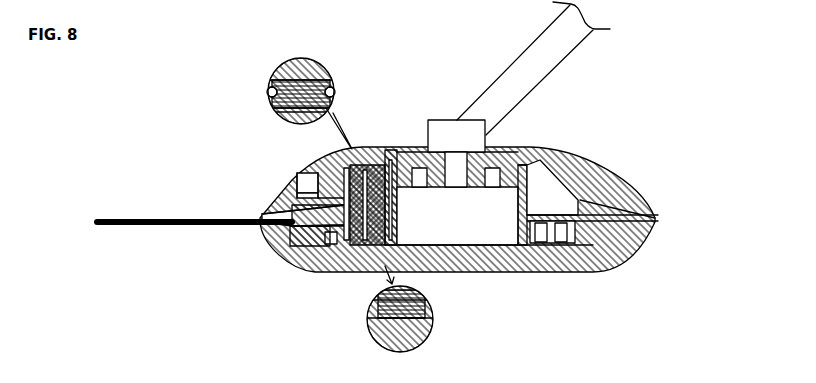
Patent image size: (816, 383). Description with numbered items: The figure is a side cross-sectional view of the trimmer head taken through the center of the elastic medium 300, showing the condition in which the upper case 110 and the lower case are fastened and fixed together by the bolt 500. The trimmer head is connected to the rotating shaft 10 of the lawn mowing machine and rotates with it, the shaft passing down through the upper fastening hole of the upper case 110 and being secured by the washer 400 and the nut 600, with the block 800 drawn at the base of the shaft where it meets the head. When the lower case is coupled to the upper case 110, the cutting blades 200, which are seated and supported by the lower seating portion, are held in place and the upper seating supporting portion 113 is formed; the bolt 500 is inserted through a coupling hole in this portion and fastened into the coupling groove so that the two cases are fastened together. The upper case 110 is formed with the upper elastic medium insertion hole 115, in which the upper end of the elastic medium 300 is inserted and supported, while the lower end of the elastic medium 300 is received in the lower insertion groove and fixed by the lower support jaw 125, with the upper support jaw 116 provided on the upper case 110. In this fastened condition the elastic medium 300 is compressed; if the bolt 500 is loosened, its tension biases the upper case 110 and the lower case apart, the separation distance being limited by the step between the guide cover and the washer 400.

The rotating shaft 10 is at (525, 65).
The upper case 110 is at (598, 164).
The upper seating supporting portion 113 is at (268, 206).
The upper elastic medium insertion hole 115 is at (272, 78).
The upper support jaw 116 is at (328, 86).
The lower support jaw 125 is at (428, 318).
The cutting blades 200 is at (140, 220).
The elastic medium 300 is at (298, 58).
The washer 400 is at (408, 148).
The bolt 500 is at (296, 178).
The nut 600 is at (305, 172).
The connector block 800 is at (426, 121).